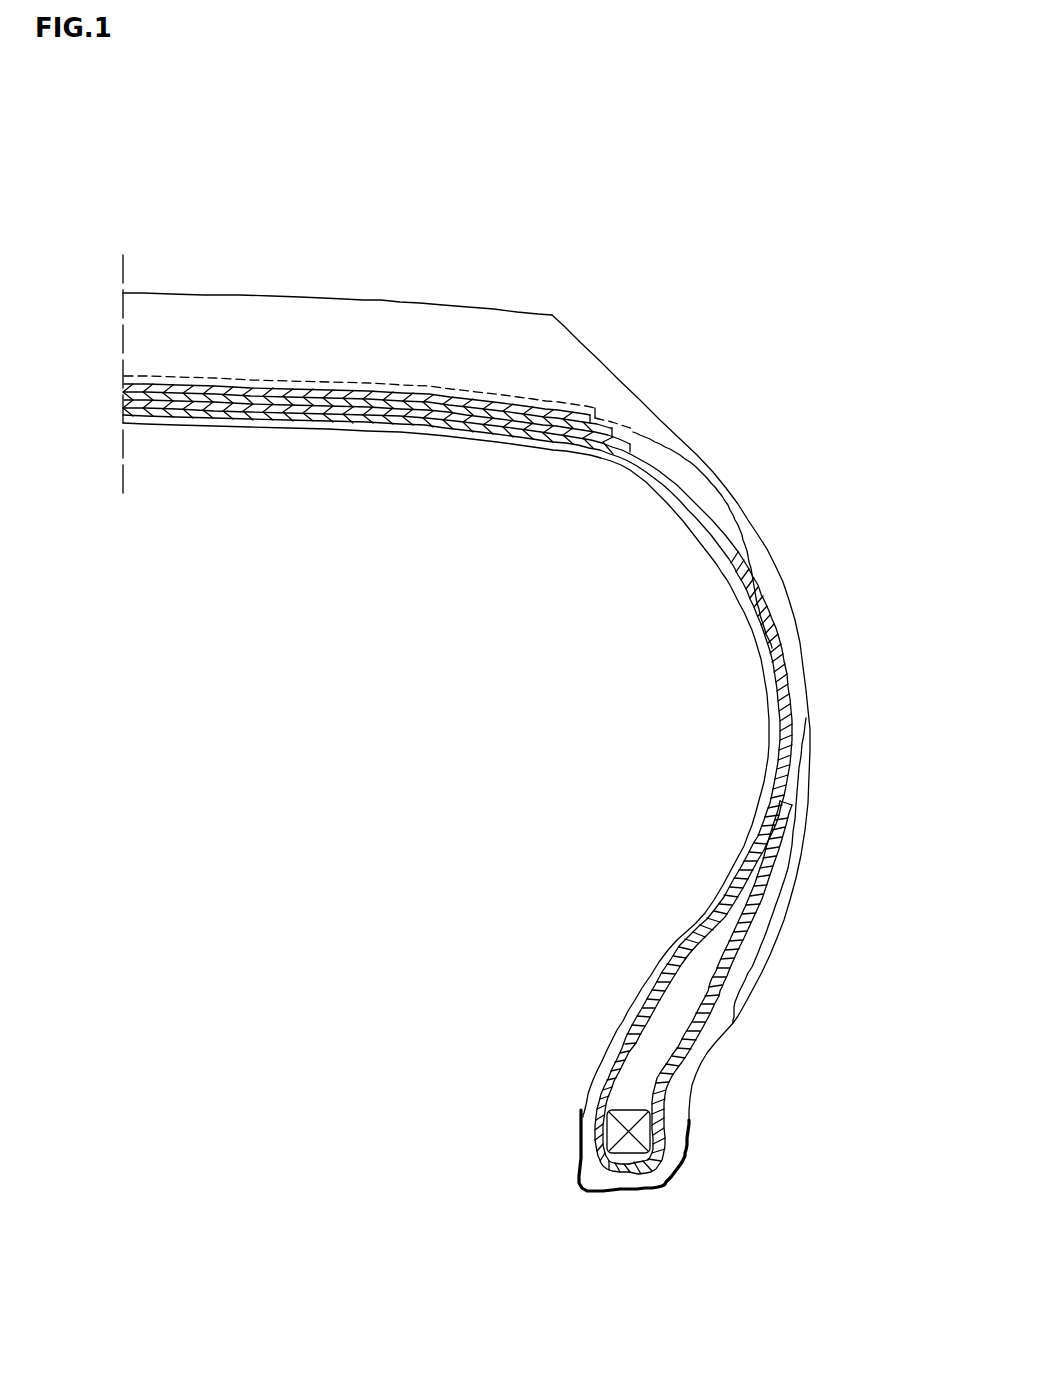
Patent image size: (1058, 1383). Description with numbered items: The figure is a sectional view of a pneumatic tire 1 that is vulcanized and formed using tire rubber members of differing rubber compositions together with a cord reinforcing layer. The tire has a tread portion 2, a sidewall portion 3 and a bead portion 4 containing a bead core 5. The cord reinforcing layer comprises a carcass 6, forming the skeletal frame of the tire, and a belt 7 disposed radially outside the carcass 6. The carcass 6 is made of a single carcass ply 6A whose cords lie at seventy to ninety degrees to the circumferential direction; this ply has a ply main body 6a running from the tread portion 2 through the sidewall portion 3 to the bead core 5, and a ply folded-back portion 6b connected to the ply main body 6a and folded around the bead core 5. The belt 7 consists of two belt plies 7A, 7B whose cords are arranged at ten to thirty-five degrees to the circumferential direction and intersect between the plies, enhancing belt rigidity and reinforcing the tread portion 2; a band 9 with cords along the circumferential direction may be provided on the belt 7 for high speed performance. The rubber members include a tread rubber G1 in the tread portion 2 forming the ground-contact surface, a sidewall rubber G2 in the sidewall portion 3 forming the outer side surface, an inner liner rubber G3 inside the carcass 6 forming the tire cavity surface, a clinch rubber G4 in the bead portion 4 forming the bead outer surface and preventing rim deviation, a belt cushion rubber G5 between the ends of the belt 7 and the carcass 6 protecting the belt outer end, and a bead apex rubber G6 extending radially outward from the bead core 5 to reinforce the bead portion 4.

The pneumatic tire 1 is at (504, 654).
The tread portion 2 is at (358, 272).
The sidewall portion 3 is at (808, 655).
The bead portion 4 is at (573, 1090).
The bead core 5 is at (627, 1147).
The carcass 6 is at (457, 791).
The carcass ply 6A is at (457, 791).
The ply main body 6a is at (747, 873).
The ply folded-back portion 6b is at (730, 937).
The belt 7 is at (376, 493).
The belt ply 7A is at (272, 398).
The belt ply 7B is at (320, 390).
The band 9 is at (232, 375).
The tread rubber G1 is at (378, 302).
The sidewall rubber G2 is at (748, 535).
The inner liner rubber G3 is at (753, 617).
The clinch rubber G4 is at (700, 1043).
The belt cushion rubber G5 is at (632, 448).
The bead apex rubber G6 is at (660, 1028).